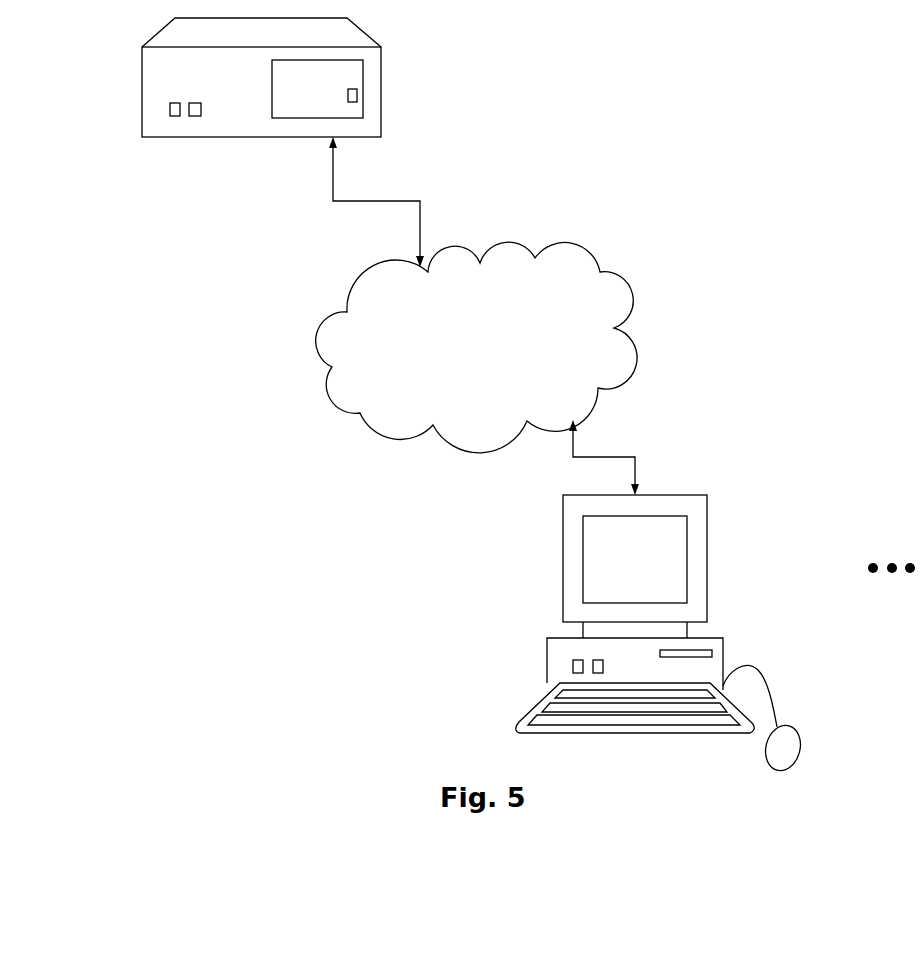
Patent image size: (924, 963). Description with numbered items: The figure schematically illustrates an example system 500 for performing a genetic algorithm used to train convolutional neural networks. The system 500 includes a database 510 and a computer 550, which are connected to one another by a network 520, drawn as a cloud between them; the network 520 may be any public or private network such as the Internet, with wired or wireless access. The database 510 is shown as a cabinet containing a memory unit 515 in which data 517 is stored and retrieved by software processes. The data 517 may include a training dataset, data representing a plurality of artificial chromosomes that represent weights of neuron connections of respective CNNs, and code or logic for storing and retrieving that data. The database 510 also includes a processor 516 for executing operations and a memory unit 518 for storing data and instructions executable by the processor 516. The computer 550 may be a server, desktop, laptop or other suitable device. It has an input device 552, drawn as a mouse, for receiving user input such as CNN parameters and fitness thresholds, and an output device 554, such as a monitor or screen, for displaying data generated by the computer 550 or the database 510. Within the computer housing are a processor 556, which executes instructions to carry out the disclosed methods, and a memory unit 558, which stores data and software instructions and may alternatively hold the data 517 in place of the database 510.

The system 500 is at (709, 189).
The database 510 is at (217, 74).
The memory unit 515 is at (352, 94).
The processor 516 is at (170, 107).
The data 517 is at (351, 102).
The memory unit 518 is at (190, 103).
The network 520 is at (497, 381).
The computer 550 is at (702, 495).
The input device 552 is at (791, 730).
The output device 554 is at (665, 559).
The processor 556 is at (573, 667).
The memory unit 558 is at (583, 660).